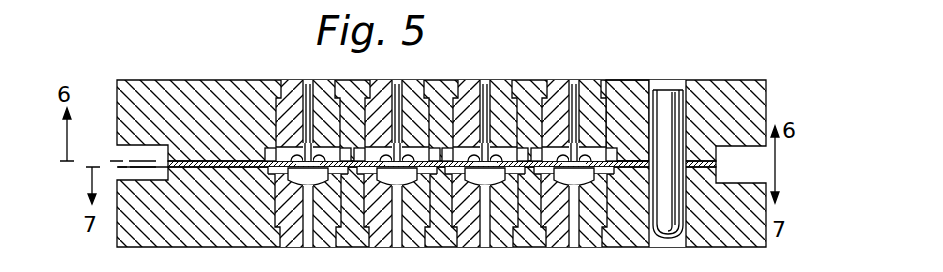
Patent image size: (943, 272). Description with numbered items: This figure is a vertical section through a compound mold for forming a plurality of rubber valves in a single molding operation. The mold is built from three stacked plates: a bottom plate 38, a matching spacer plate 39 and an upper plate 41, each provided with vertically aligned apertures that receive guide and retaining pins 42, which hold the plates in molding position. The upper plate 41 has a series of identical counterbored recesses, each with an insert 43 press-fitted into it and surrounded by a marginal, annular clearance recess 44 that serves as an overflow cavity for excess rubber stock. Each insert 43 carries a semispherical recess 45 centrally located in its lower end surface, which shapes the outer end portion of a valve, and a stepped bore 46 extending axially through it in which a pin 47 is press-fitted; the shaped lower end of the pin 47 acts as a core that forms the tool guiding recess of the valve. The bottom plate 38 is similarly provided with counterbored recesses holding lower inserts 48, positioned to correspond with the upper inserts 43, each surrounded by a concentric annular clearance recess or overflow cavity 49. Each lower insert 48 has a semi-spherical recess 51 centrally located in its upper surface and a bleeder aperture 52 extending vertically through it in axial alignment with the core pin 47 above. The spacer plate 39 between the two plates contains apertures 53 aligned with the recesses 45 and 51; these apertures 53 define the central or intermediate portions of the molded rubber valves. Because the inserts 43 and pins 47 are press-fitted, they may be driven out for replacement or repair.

The bottom plate 38 is at (753, 208).
The spacer plate 39 is at (713, 167).
The upper plate 41 is at (757, 110).
The guide and retaining pins 42 is at (667, 203).
The insert 43 is at (473, 95).
The annular clearance recess 44 is at (268, 150).
The semispherical recess 45 is at (262, 147).
The stepped bore 46 is at (577, 110).
The pin 47 is at (592, 97).
The insert 48 is at (278, 220).
The annular clearance recess 49 is at (273, 178).
The semi-spherical recess 51 is at (277, 203).
The bleeder aperture 52 is at (485, 204).
The aperture 53 is at (605, 137).